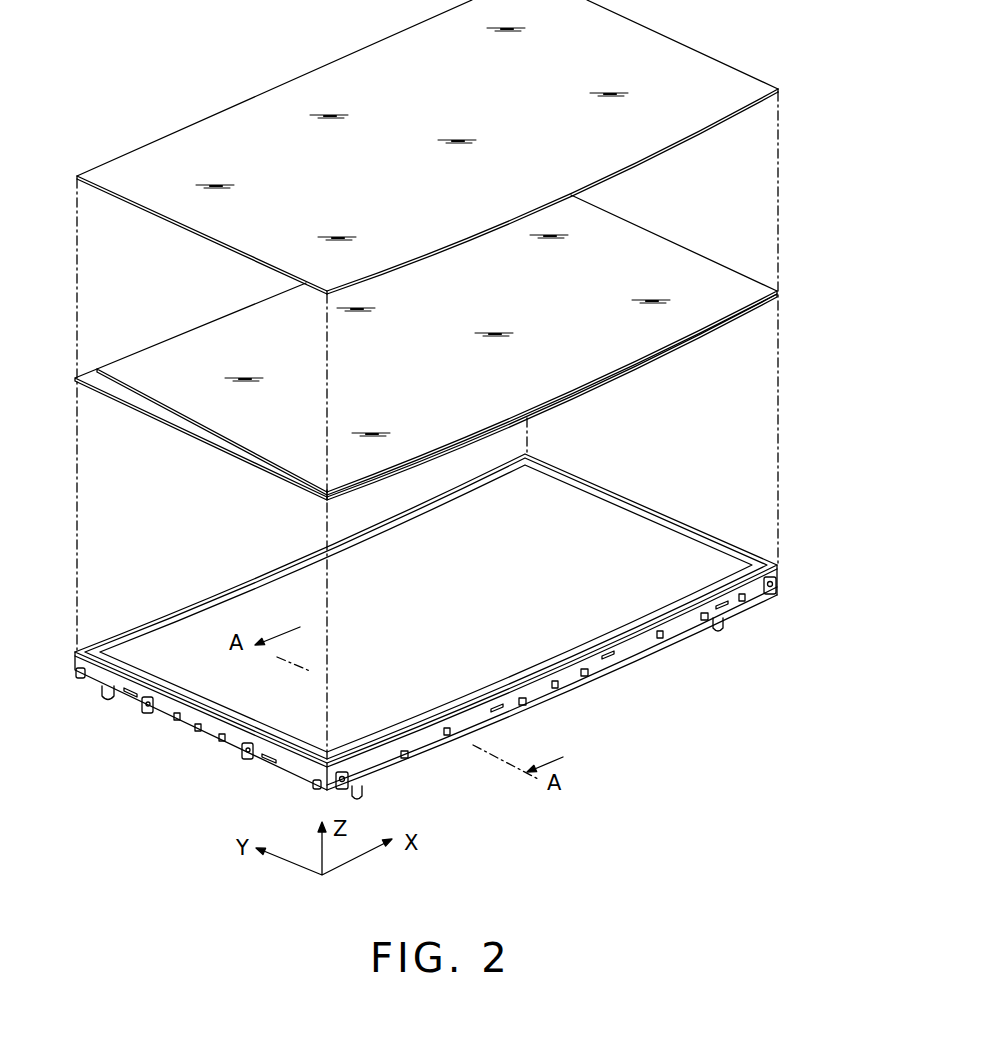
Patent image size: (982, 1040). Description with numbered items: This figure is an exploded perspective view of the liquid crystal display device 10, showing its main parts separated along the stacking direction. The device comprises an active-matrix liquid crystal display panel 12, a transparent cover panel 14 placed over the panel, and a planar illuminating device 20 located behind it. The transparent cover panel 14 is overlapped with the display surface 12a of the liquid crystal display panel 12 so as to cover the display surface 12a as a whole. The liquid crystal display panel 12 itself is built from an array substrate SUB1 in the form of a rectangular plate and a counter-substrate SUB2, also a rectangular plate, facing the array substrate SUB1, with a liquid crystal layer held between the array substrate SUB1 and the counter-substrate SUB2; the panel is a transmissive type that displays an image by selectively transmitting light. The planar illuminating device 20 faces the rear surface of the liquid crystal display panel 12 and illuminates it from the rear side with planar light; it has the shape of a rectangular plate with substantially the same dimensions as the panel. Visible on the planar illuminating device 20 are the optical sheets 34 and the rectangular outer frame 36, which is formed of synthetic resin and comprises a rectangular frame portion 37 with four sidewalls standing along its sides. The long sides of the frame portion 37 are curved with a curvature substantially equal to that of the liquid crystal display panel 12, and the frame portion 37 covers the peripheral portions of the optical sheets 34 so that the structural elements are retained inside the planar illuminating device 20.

The liquid crystal display device 10 is at (787, 401).
The active-matrix liquid crystal display panel 12 is at (602, 392).
The display surface 12a is at (614, 263).
The transparent cover panel 14 is at (340, 83).
The array substrate SUB1 is at (85, 370).
The counter-substrate SUB2 is at (168, 355).
The planar illuminating device 20 is at (547, 700).
The optical sheets 34 is at (623, 540).
The outer frame 36 is at (633, 647).
The frame portion 37 is at (410, 733).